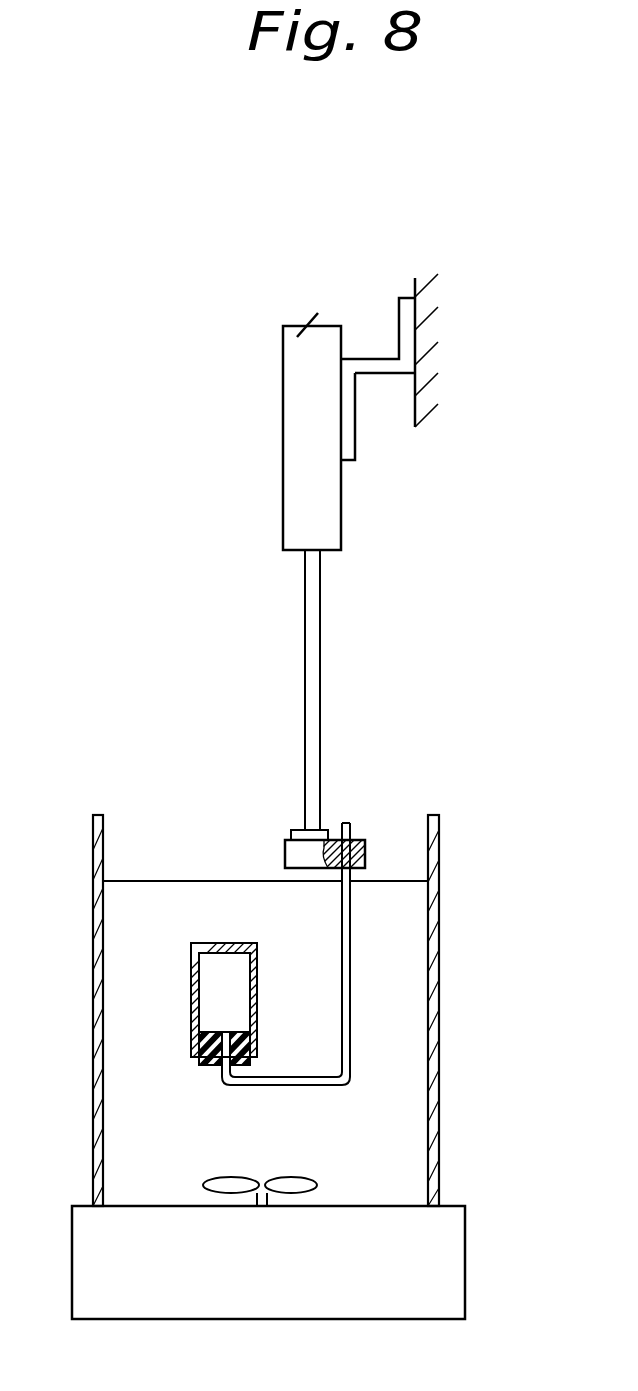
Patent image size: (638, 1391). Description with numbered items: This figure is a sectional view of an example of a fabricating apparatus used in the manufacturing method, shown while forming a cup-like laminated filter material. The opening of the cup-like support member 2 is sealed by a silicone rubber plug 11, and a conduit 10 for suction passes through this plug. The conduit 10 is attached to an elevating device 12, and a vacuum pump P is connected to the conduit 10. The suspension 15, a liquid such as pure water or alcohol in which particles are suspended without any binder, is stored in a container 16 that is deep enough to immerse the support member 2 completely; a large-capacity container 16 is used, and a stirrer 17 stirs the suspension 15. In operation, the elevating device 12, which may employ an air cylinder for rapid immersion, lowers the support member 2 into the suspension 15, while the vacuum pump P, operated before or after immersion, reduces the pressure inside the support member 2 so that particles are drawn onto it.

The cup-like support member 2 is at (218, 940).
The conduit for suction 10 is at (350, 953).
The silicone rubber plug 11 is at (217, 1067).
The elevating device 12 is at (303, 627).
The suspension 15 is at (397, 1117).
The container 16 is at (440, 897).
The stirrer 17 is at (330, 1180).
The vacuum pump P is at (345, 817).